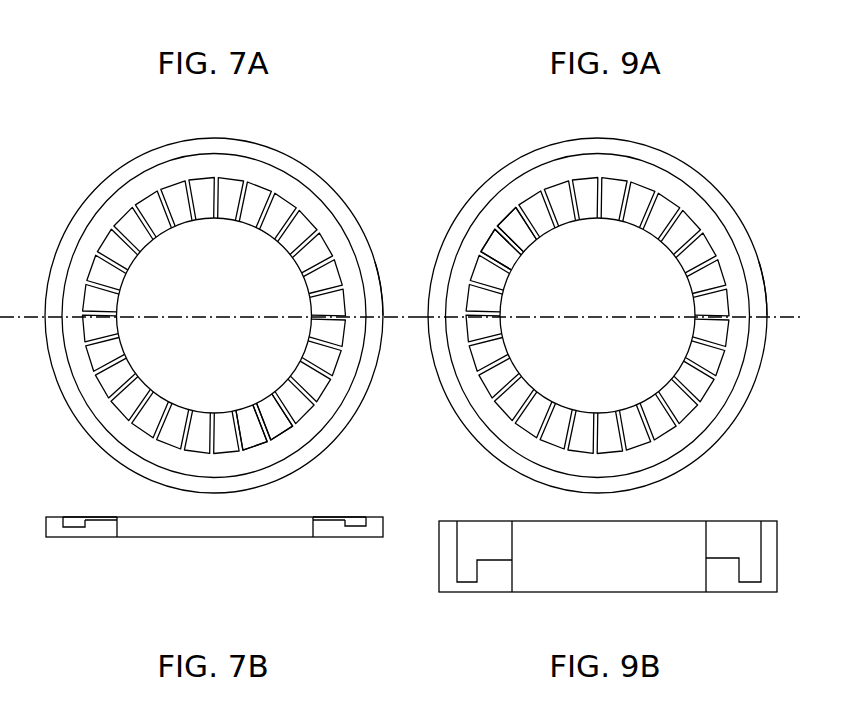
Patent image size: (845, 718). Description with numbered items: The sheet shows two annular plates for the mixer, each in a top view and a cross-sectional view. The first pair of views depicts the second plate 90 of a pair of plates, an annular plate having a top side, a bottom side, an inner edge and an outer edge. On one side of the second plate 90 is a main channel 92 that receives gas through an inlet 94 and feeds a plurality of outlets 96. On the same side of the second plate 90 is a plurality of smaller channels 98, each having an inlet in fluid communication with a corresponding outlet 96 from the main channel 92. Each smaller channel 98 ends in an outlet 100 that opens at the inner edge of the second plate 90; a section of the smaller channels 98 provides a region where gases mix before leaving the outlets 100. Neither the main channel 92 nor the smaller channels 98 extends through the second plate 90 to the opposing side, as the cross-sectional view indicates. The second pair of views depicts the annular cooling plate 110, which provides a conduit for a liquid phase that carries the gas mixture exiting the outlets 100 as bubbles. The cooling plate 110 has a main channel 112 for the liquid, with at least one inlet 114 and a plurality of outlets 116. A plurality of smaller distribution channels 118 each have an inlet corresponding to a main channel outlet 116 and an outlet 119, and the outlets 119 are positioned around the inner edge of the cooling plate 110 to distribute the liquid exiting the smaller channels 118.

In FIG. 7A, the second plate 90 is at (307, 163).
In FIG. 7B, the second plate 90 is at (46, 537).
In FIG. 7A, the main channel 92 is at (313, 203).
In FIG. 7B, the main channel 92 is at (70, 522).
In FIG. 7A, the inlet 94 is at (368, 248).
In FIG. 7A, the outlets 96 is at (277, 433).
In FIG. 7B, the outlets 96 is at (67, 517).
In FIG. 7A, the smaller channels 98 is at (216, 177).
In FIG. 7B, the smaller channels 98 is at (105, 517).
In FIG. 7A, the outlet 100 is at (147, 200).
In FIG. 7B, the outlet 100 is at (123, 520).
In FIG. 9A, the cooling plate 110 is at (712, 183).
In FIG. 9B, the cooling plate 110 is at (445, 555).
In FIG. 9A, the main channel 112 is at (720, 242).
In FIG. 9B, the main channel 112 is at (467, 527).
In FIG. 9A, the inlet 114 is at (762, 293).
In FIG. 9A, the outlets 116 is at (652, 190).
In FIG. 9A, the smaller distribution channels 118 is at (560, 181).
In FIG. 9B, the smaller distribution channels 118 is at (495, 533).
In FIG. 9A, the outlet 119 is at (510, 212).